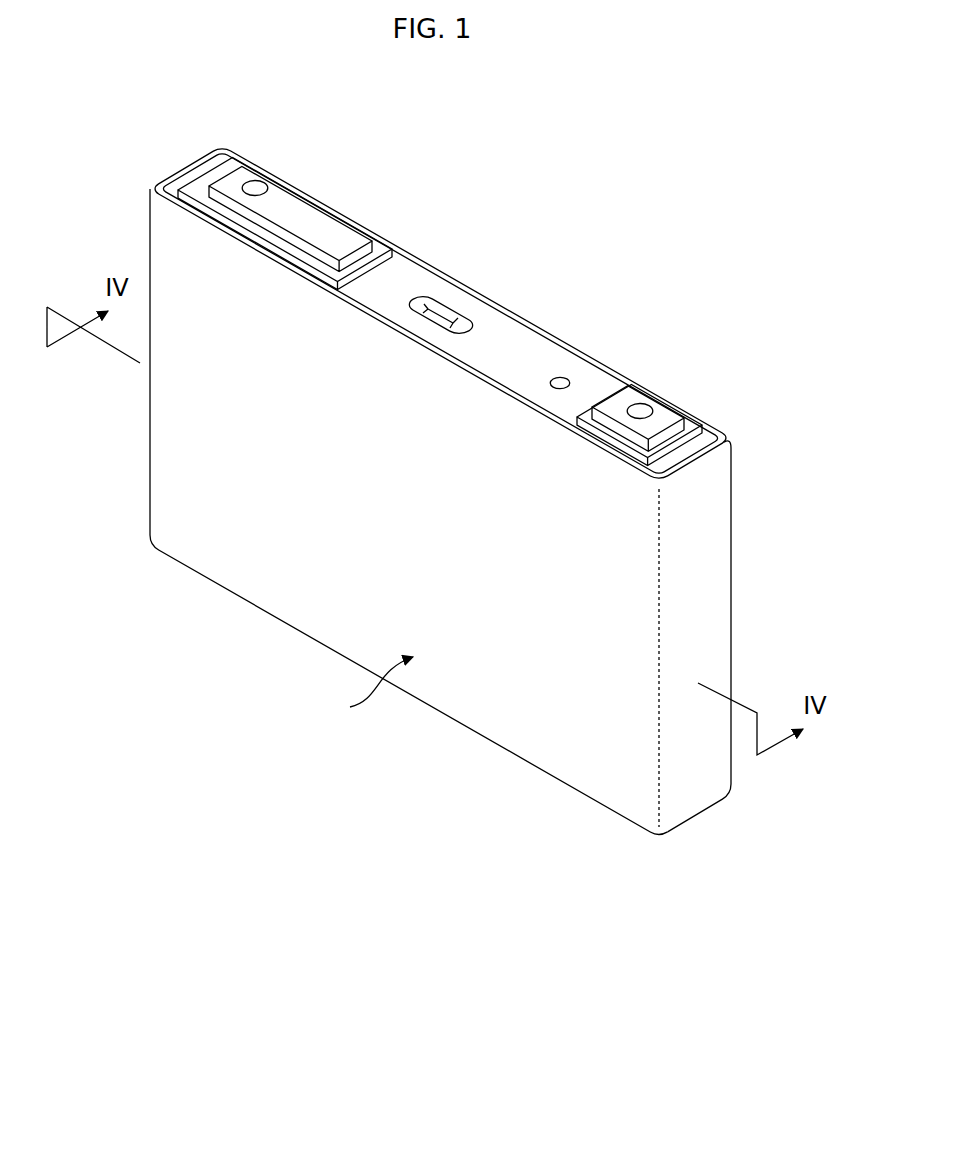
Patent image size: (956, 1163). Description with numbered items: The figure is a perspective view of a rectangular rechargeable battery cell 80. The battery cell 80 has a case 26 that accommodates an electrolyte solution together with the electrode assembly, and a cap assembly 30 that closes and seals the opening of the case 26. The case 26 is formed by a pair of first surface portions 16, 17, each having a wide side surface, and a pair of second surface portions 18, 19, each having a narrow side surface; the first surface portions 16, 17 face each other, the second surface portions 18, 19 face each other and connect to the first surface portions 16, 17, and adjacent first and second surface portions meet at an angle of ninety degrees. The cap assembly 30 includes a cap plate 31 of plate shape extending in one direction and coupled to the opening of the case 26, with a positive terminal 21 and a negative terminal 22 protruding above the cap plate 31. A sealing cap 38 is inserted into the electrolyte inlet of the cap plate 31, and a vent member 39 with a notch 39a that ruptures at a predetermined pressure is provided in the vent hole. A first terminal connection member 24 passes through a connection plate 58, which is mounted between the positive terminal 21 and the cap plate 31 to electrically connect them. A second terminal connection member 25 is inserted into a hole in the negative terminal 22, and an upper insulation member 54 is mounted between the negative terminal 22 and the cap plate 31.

The battery cell 80 is at (510, 112).
The first surface portion 16 is at (250, 587).
The first surface portion 17 is at (732, 571).
The second surface portion 18 is at (712, 623).
The second surface portion 19 is at (150, 440).
The positive terminal 21 is at (665, 405).
The negative terminal 22 is at (313, 208).
The first terminal connection member 24 is at (641, 408).
The second terminal connection member 25 is at (256, 186).
The case 26 is at (366, 692).
The cap assembly 30 is at (545, 328).
The cap plate 31 is at (400, 270).
The sealing cap 38 is at (564, 378).
The vent member 39 is at (432, 304).
The notch 39a is at (451, 311).
The upper insulation member 54 is at (210, 183).
The connection plate 58 is at (698, 413).